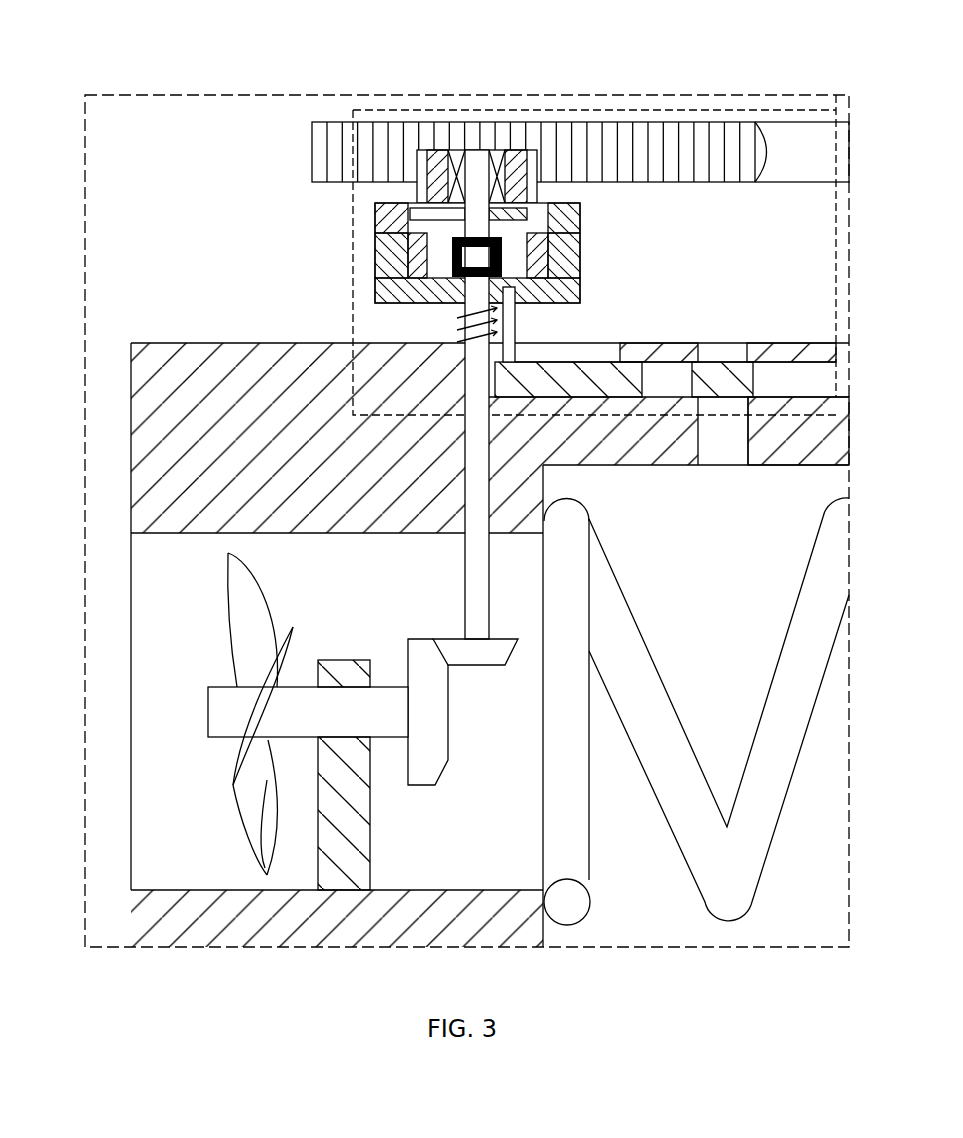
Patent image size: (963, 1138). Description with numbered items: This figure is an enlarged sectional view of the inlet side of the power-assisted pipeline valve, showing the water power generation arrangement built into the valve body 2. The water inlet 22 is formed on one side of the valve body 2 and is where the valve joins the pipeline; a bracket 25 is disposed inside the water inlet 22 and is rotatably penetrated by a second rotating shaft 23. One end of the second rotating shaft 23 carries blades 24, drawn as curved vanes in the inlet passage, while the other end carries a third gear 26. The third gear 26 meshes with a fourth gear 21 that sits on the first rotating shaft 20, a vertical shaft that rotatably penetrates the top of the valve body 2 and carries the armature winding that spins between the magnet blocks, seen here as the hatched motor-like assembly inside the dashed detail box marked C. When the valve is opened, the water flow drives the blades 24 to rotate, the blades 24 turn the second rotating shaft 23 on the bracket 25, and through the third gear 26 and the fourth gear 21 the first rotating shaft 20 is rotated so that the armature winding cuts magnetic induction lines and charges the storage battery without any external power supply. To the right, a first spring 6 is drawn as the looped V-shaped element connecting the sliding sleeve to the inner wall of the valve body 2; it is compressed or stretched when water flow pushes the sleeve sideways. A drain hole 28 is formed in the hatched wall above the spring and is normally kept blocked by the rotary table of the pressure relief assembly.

The valve body 2 is at (293, 372).
The detail region C is at (837, 117).
The first spring 6 is at (672, 780).
The first rotating shaft 20 is at (477, 526).
The fourth gear 21 is at (475, 650).
The water inlet 22 is at (168, 743).
The second rotating shaft 23 is at (222, 715).
The blades 24 is at (262, 720).
The bracket 25 is at (343, 820).
The third gear 26 is at (418, 758).
The drain hole 28 is at (727, 435).